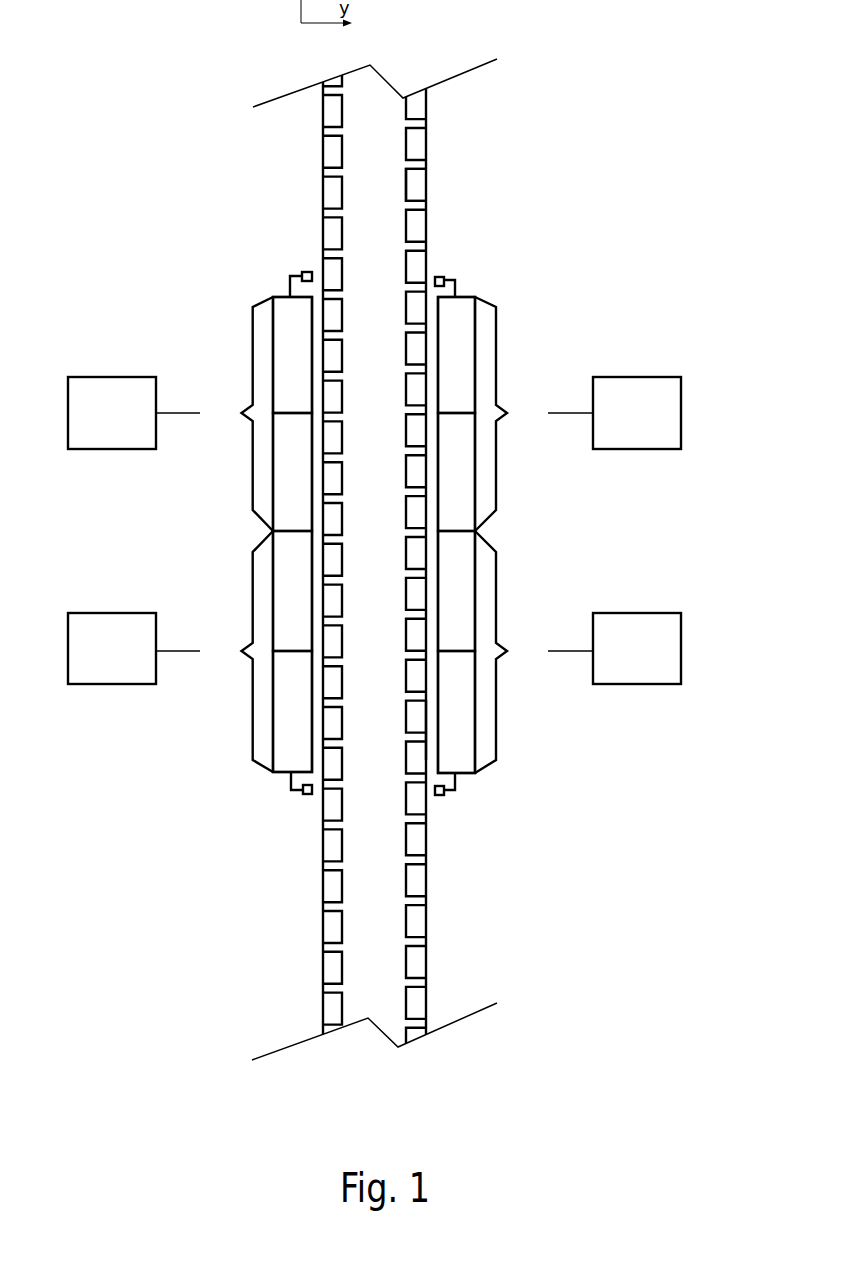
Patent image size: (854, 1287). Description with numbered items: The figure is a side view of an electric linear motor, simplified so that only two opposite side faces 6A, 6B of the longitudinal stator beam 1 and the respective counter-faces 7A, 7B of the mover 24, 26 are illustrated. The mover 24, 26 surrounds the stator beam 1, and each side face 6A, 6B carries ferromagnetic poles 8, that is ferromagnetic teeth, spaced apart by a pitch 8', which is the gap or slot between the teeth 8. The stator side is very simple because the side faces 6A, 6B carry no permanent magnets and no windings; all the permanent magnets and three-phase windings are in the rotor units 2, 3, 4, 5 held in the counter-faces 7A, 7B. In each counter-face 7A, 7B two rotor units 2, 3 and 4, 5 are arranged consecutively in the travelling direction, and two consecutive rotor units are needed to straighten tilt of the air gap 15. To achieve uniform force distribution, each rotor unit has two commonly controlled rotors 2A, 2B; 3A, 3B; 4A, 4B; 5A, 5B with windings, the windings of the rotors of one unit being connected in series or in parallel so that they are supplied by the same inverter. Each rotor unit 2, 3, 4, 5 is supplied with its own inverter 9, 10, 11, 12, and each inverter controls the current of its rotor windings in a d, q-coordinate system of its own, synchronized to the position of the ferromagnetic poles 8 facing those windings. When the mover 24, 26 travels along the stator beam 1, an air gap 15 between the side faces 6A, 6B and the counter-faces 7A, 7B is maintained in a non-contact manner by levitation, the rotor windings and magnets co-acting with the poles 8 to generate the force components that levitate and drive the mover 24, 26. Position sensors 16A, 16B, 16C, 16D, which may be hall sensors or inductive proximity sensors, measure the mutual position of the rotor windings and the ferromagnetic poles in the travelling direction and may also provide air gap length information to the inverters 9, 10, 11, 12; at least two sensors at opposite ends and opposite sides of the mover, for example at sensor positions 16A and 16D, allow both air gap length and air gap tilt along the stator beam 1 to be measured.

The stator beam 1 is at (377, 458).
The rotor unit 2 is at (236, 414).
The rotor 2A is at (281, 365).
The rotor 2B is at (281, 485).
The rotor unit 3 is at (236, 651).
The rotor 3A is at (281, 603).
The rotor 3B is at (281, 721).
The rotor unit 4 is at (511, 414).
The rotor 4A is at (446, 365).
The rotor 4B is at (446, 485).
The rotor unit 5 is at (511, 652).
The rotor 5A is at (446, 603).
The rotor 5B is at (446, 721).
The side face 6A is at (322, 823).
The side face 6B is at (428, 815).
The counter-face 7A is at (312, 297).
The counter-face 7B is at (438, 298).
The ferromagnetic poles 8 is at (458, 573).
The pitch 8' is at (461, 170).
The inverter 9 is at (103, 423).
The inverter 10 is at (98, 661).
The inverter 11 is at (625, 423).
The inverter 12 is at (625, 661).
The air gap 15 is at (432, 730).
The position sensor 16A is at (289, 284).
The position sensor 16B is at (303, 793).
The position sensor 16C is at (457, 283).
The position sensor 16D is at (444, 794).
The mover 24 is at (630, 283).
The mover 26 is at (528, 329).